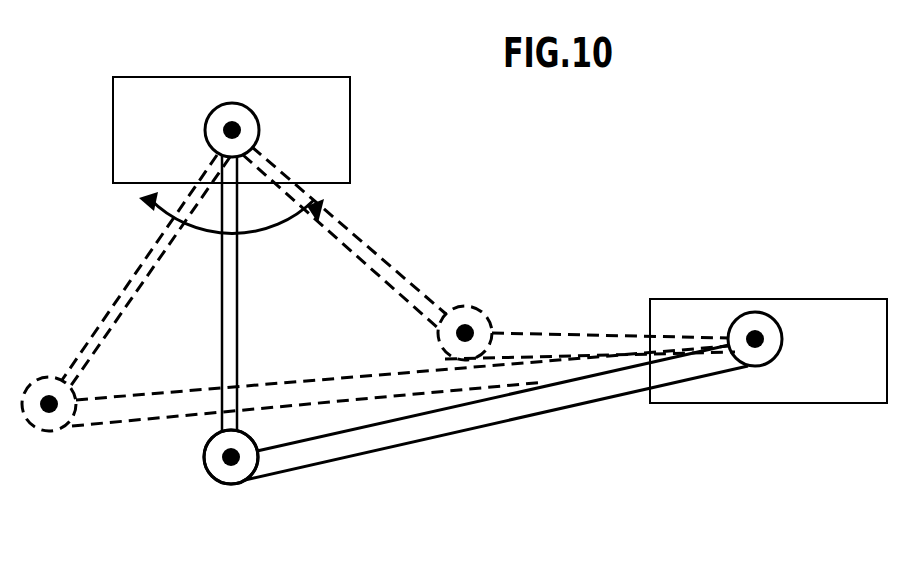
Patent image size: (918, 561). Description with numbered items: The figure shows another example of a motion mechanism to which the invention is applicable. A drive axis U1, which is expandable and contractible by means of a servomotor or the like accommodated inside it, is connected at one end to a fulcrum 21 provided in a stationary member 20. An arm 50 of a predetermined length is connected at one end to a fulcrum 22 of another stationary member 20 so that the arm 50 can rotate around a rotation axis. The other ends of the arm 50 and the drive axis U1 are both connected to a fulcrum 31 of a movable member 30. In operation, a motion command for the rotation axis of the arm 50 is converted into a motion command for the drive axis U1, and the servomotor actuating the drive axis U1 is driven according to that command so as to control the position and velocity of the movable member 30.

The stationary member 20 is at (277, 88).
The second pivot joint 21 is at (757, 312).
The fulcrum 22 is at (216, 107).
The movable member 30 is at (232, 484).
The fulcrum 31 is at (211, 447).
The arm 50 is at (222, 333).
The drive axis U1 is at (472, 431).